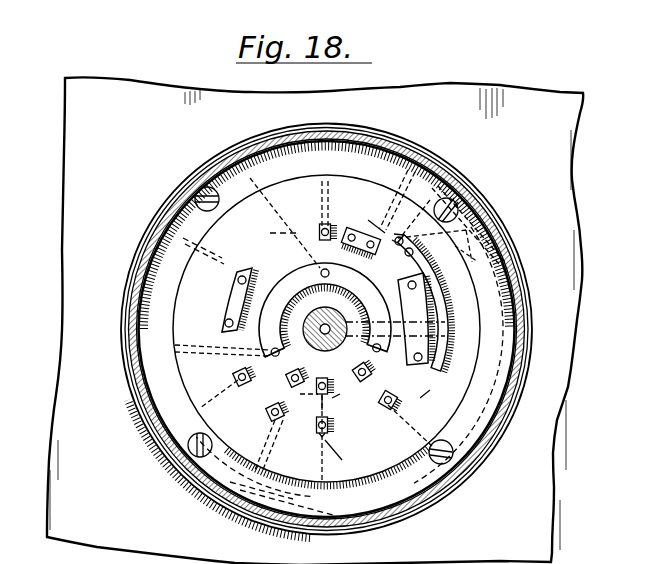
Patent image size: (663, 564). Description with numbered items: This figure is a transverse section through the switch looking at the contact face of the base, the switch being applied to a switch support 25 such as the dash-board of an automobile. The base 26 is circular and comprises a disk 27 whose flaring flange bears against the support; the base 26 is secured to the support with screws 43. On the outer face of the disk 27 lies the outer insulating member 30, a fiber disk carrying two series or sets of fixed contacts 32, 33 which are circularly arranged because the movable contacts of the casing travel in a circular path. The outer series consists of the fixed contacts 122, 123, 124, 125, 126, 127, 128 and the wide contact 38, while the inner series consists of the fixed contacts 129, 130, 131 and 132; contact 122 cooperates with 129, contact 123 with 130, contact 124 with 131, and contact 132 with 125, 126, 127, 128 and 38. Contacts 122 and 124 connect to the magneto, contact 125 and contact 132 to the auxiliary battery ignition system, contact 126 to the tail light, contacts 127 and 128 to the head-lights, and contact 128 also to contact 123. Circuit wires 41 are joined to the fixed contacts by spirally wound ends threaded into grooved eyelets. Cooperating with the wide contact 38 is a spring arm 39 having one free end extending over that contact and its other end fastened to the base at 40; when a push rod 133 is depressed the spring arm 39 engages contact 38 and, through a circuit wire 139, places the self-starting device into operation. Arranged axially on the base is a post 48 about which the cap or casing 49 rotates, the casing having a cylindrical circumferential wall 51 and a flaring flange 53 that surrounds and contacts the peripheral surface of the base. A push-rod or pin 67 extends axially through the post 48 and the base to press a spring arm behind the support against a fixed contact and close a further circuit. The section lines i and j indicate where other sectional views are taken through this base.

The switch support 25 is at (315, 320).
The base 26 is at (495, 371).
The disk 27 is at (327, 237).
The outer insulating member 30 is at (326, 330).
The fixed contacts 32 is at (318, 270).
The fixed contacts 33 is at (225, 312).
The wide contact 38 is at (426, 318).
The spring arm 39 is at (445, 340).
The fastening point of spring arm 40 is at (401, 237).
The circuit wires 41 is at (343, 371).
The screws 43 is at (203, 189).
The post 48 is at (328, 314).
The cap or casing 49 is at (507, 413).
The cylindrical circumferential wall 51 is at (140, 278).
The flaring flange 53 is at (128, 346).
The push-rod or pin 67 is at (320, 329).
The fixed contact 122 is at (383, 407).
The fixed contact 123 is at (318, 431).
The fixed contact 124 is at (267, 414).
The fixed contact 125 is at (238, 372).
The fixed contact 126 is at (238, 282).
The fixed contact 127 is at (320, 226).
The fixed contact 128 is at (370, 252).
The fixed contact 129 is at (372, 373).
The fixed contact 130 is at (320, 395).
The fixed contact 131 is at (289, 382).
The fixed contact 132 is at (272, 341).
The push rod 133 is at (414, 253).
The circuit wire 139 is at (476, 260).
The section line i— i is at (393, 307).
The section line j— j is at (336, 428).